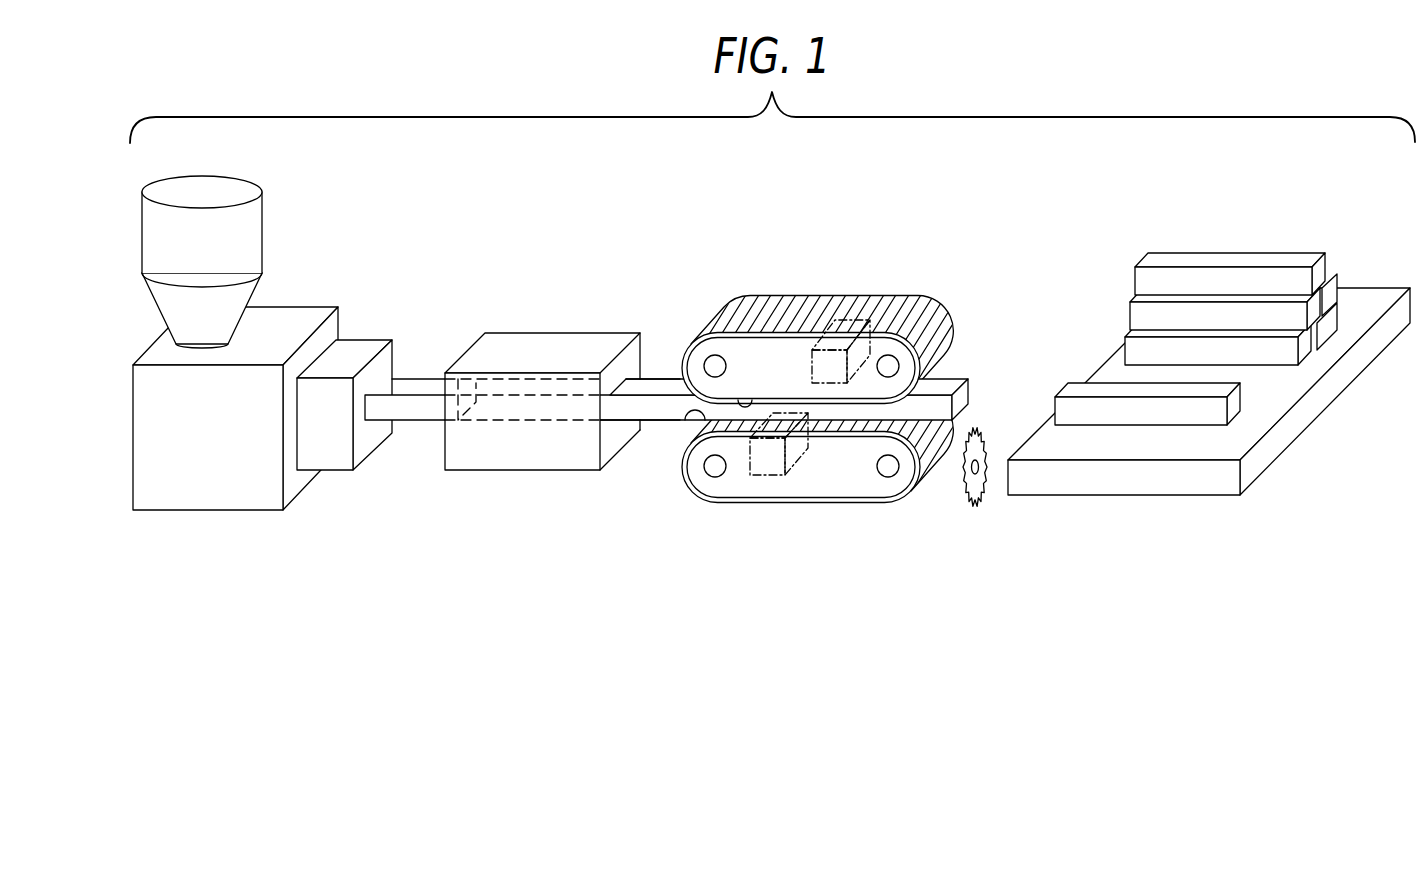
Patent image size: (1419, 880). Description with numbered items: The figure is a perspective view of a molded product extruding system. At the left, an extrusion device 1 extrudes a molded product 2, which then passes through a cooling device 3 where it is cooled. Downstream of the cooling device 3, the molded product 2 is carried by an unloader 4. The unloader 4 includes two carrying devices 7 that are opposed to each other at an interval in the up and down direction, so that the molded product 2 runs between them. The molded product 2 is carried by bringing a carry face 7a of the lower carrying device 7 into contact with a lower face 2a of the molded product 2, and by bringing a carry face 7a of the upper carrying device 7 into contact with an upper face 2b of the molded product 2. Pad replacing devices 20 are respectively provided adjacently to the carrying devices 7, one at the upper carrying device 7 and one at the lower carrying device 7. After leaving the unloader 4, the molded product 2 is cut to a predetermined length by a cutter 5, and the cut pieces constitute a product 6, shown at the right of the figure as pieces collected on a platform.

The extrusion device 1 is at (317, 290).
The molded product 2 is at (413, 412).
The lower face of the molded product 2a is at (650, 423).
The upper face of the molded product 2b is at (650, 387).
The cooling device 3 is at (555, 325).
The unloader 4 is at (839, 396).
The cutter 5 is at (977, 506).
The product 6 is at (1237, 258).
The carrying device 7 is at (712, 313).
The carry face 7a is at (746, 399).
The pad replacing device 20 is at (812, 337).